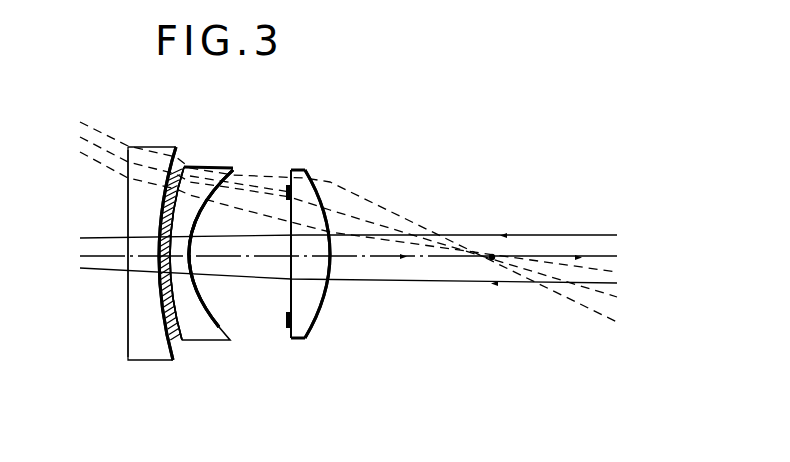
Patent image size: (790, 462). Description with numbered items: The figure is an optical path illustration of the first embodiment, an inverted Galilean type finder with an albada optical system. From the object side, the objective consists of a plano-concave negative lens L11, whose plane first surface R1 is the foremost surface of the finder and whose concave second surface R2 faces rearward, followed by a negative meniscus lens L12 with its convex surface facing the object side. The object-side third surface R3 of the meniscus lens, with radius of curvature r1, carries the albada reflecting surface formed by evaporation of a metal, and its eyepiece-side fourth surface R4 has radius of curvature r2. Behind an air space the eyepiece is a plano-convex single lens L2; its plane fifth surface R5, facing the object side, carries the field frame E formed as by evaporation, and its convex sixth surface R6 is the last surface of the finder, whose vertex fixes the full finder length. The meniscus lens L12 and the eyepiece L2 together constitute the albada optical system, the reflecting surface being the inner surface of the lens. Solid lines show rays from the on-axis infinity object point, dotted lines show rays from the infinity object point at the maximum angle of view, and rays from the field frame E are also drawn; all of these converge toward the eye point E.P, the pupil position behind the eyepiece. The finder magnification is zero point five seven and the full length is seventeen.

The plano-concave negative lens L11 is at (153, 145).
The negative meniscus lens L12 is at (212, 165).
The eyepiece L2 is at (298, 170).
The field frame E is at (287, 190).
The eye point E.P is at (491, 260).
The first surface R1 is at (127, 337).
The second surface R2 is at (170, 333).
The third surface R3 is at (187, 327).
The fourth surface R4 is at (217, 327).
The fifth surface R5 is at (289, 337).
The sixth surface R6 is at (313, 325).
The radius of curvature of third surface r1 is at (192, 294).
The radius of curvature of fourth surface r2 is at (225, 296).